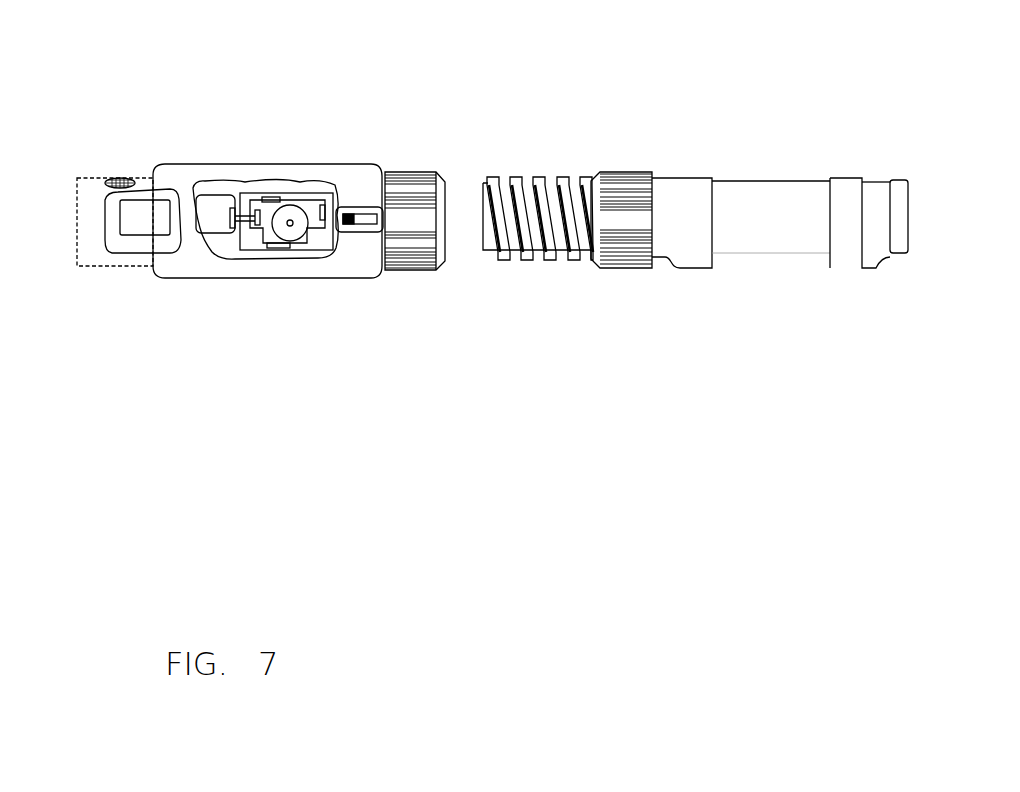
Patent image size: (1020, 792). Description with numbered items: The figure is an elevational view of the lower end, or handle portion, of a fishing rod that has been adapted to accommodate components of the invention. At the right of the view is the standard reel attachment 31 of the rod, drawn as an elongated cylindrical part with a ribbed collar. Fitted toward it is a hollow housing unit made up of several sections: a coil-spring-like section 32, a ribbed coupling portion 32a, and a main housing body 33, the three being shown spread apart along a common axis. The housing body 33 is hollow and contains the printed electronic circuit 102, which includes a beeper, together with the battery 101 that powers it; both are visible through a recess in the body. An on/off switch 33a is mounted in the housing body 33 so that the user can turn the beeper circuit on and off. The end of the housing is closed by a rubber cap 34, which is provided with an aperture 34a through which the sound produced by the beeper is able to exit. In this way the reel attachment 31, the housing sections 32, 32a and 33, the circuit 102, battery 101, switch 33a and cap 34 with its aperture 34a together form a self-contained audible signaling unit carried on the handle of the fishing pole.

The standard reel attachment 31 is at (755, 197).
The housing unit section 32 is at (522, 253).
The housing coupling portion 32a is at (428, 190).
The housing body 33 is at (262, 165).
The on/off switch 33a is at (352, 212).
The rubber cap 34 is at (152, 268).
The aperture 34a is at (124, 178).
The battery 101 is at (215, 228).
The printed electronic circuit 102 is at (305, 242).